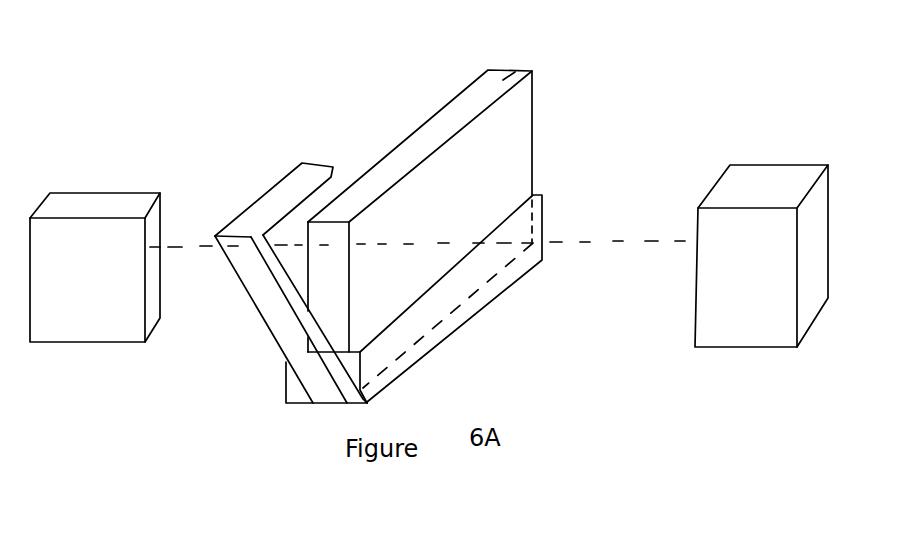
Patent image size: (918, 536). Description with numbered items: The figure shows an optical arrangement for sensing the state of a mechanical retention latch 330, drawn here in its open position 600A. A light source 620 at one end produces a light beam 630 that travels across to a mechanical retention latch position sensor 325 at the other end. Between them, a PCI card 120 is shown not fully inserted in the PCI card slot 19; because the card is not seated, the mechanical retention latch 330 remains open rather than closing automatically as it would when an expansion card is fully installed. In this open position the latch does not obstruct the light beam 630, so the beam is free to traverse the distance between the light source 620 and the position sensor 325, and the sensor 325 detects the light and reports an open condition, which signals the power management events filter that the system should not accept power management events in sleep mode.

The open position 600A is at (187, 39).
The light source 620 is at (120, 193).
The mechanical retention latch 330 is at (262, 319).
The PCI card 120 is at (532, 101).
The PCI card slot 19 is at (513, 283).
The light beam 630 is at (623, 240).
The mechanical retention latch position sensor 325 is at (753, 165).